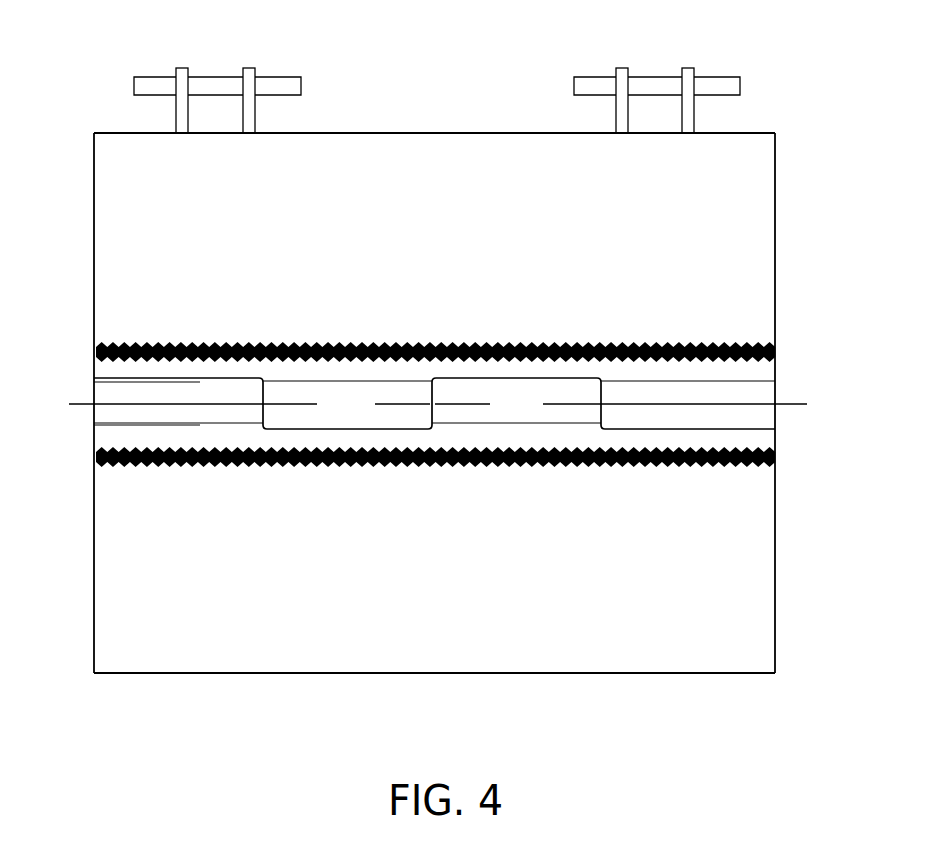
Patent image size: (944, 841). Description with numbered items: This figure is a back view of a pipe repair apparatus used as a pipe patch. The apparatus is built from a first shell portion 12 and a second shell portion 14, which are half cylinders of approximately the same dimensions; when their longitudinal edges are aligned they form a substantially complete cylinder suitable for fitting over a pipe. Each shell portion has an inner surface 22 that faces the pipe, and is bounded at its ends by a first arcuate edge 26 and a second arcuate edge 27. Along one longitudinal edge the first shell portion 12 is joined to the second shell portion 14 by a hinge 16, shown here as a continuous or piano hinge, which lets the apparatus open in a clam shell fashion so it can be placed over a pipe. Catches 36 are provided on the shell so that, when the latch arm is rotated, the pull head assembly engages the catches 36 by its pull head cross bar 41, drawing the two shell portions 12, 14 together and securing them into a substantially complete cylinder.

The first shell portion 12 is at (372, 145).
The second shell portion 14 is at (453, 652).
The hinge 16 is at (385, 463).
The inner surface 22 is at (742, 405).
The first arcuate edge 26 is at (94, 270).
The second arcuate edge 27 is at (775, 249).
The catch 36 is at (180, 68).
The pull head cross bar 41 is at (290, 77).